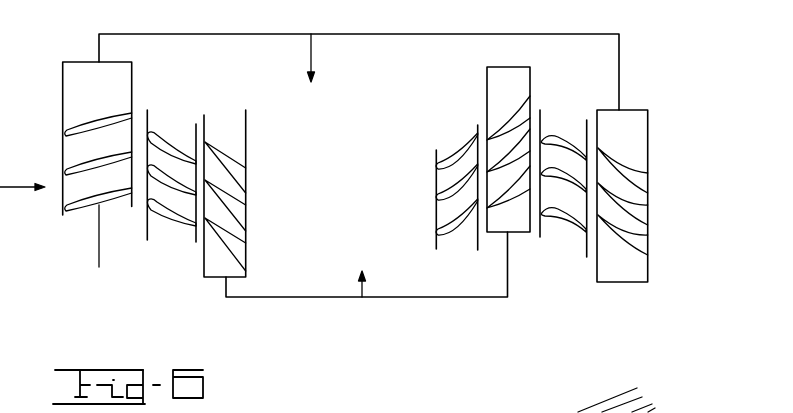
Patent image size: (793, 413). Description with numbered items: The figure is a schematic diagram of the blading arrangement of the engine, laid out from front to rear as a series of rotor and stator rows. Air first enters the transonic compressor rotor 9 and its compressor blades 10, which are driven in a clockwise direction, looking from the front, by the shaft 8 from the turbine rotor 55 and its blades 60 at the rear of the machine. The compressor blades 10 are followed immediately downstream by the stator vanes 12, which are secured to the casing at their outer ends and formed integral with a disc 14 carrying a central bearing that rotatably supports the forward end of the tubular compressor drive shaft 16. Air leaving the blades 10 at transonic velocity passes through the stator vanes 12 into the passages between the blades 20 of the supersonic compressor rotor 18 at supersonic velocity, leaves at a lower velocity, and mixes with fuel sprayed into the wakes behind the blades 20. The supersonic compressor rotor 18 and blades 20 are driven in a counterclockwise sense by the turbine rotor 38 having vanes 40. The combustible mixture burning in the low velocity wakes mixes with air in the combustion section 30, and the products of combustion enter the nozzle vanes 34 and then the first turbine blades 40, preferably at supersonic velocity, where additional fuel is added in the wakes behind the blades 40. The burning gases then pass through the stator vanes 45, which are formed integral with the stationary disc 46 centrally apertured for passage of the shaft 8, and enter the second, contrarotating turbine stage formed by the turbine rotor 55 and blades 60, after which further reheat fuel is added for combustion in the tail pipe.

The shaft 8 is at (366, 34).
The transonic compressor rotor 9 is at (63, 152).
The compressor blades 10 is at (92, 121).
The stator vanes 12 is at (169, 143).
The disc 14 is at (148, 232).
The tubular compressor drive shaft 16 is at (418, 298).
The supersonic compressor rotor 18 is at (246, 151).
The compressor blades 20 is at (240, 215).
The combustion section 30 is at (357, 171).
The nozzle vanes 34 is at (445, 190).
The turbine rotor 38 is at (487, 94).
The turbine blades 40 is at (518, 108).
The stator vanes 45 is at (555, 138).
The stationary disc 46 is at (586, 233).
The turbine rotor 55 is at (648, 270).
The turbine blades 60 is at (637, 176).